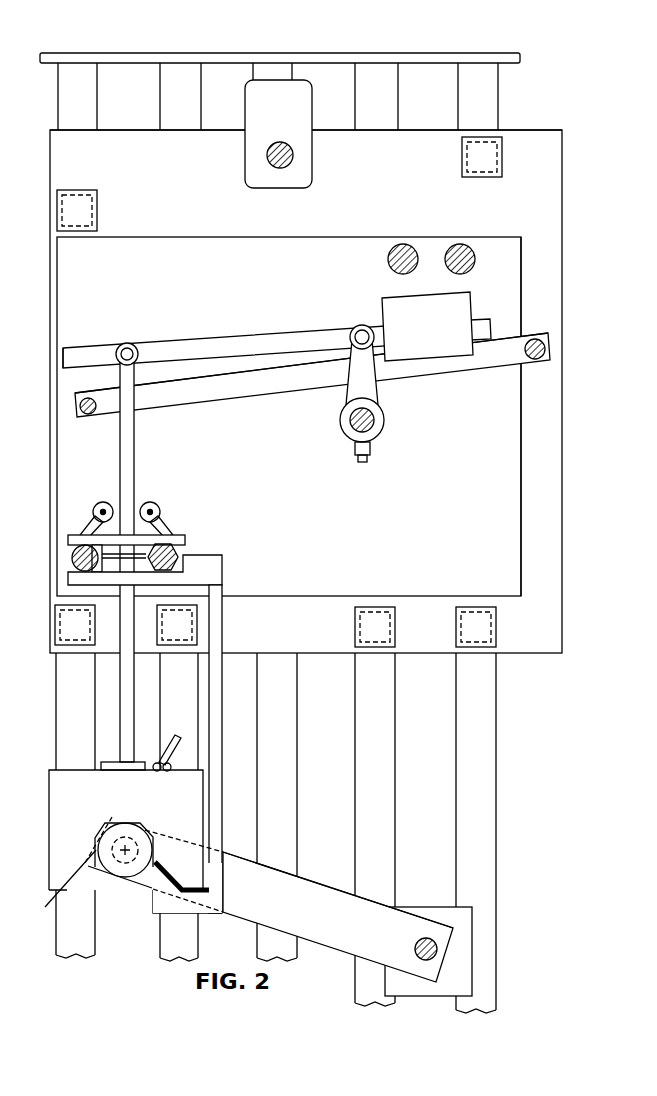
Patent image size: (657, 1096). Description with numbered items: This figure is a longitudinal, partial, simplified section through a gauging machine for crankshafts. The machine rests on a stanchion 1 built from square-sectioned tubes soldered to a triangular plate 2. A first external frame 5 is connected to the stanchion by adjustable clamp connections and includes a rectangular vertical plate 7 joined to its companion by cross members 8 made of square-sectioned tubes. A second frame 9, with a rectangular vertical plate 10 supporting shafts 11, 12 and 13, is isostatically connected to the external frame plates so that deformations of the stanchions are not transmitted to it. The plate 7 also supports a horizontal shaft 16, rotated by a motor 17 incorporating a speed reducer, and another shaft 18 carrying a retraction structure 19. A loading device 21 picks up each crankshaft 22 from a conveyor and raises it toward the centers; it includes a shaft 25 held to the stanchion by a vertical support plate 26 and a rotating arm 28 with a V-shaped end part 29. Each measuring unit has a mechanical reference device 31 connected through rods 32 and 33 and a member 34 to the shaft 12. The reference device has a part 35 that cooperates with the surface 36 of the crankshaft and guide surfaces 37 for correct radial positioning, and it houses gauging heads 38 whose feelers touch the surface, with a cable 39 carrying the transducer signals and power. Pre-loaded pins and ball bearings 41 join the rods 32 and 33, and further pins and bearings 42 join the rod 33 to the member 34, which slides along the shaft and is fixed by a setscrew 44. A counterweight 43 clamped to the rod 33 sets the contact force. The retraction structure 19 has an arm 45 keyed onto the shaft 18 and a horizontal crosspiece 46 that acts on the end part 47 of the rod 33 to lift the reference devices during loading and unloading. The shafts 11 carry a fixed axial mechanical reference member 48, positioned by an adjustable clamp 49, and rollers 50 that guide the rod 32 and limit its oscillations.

The stanchion 1 is at (551, 78).
The triangular plate 2 is at (530, 27).
The first external frame 5 is at (566, 205).
The vertical plate 7 is at (62, 157).
The cross member 8 is at (98, 193).
The second frame 9 is at (527, 303).
The vertical plate 10 is at (65, 262).
The shaft 11 is at (80, 557).
The shaft 12 is at (376, 431).
The shaft 13 is at (389, 262).
The horizontal shaft 16 is at (296, 156).
The motor 17 is at (304, 104).
The shaft 18 is at (539, 365).
The retraction structure 19 is at (242, 414).
The loading device 21 is at (330, 958).
The crankshaft 22 is at (110, 868).
The shaft 25 is at (415, 949).
The vertical support plate 26 is at (447, 864).
The rotating arm 28 is at (347, 856).
The V-shaped end part 29 is at (143, 882).
The mechanical reference device 31 is at (60, 790).
The rod 32 is at (136, 477).
The rod 33 is at (185, 342).
The member 34 is at (376, 398).
The part 35 is at (132, 822).
The surface 36 is at (115, 820).
The guide surface 37 is at (70, 892).
The gauging head 38 is at (97, 851).
The cable 39 is at (167, 742).
The pins and ball bearings 41 is at (130, 345).
The pins and ball bearings 42 is at (362, 325).
The counterweight 43 is at (462, 315).
The setscrew 44 is at (365, 462).
The arm 45 is at (206, 422).
The horizontal crosspiece 46 is at (91, 415).
The end part 47 is at (77, 353).
The fixed axial mechanical reference member 48 is at (220, 570).
The adjustable clamp 49 is at (180, 537).
The roller 50 is at (109, 472).